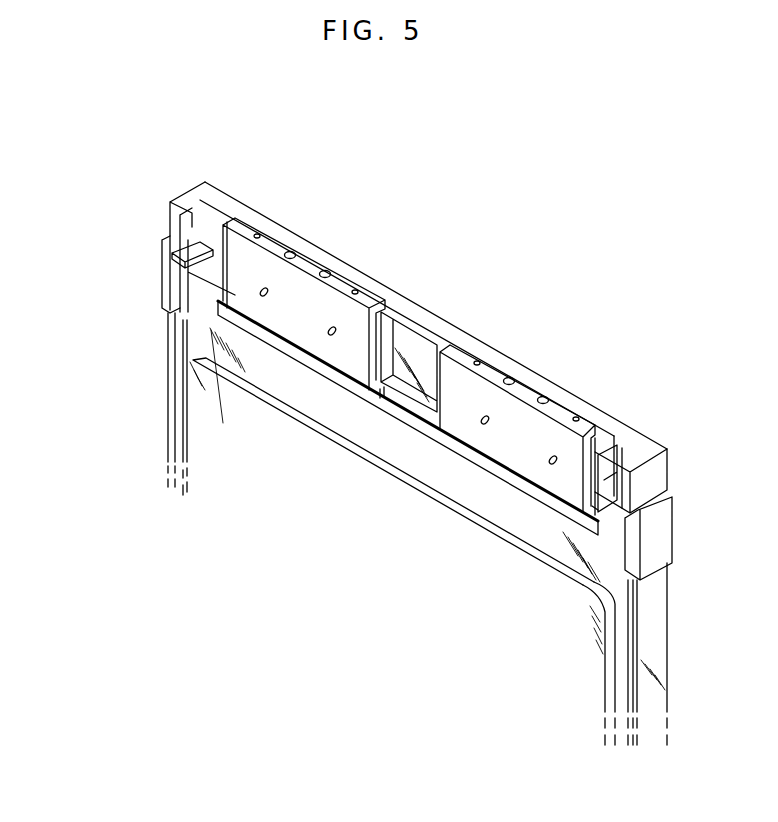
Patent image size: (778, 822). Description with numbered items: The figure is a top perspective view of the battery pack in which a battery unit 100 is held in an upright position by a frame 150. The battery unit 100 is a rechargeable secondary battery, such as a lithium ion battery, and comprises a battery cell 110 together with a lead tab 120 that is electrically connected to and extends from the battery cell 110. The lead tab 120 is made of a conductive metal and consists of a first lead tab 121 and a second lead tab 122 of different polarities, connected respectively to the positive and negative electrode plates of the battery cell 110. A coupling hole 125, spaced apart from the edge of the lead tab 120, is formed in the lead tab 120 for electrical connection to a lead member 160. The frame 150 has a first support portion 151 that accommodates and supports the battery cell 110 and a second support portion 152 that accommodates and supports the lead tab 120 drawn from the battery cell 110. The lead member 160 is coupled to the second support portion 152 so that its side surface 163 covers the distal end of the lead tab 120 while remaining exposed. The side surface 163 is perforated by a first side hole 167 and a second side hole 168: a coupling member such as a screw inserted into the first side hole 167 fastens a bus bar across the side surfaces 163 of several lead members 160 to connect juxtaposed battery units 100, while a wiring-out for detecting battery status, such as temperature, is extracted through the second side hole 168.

The battery unit 100 is at (165, 428).
The battery cell 110 is at (233, 455).
The lead tab 120 is at (321, 323).
The first lead tab 121 is at (320, 316).
The second lead tab 122 is at (528, 443).
The coupling hole 125 is at (259, 291).
The frame 150 is at (97, 265).
The first support portion 151 is at (175, 400).
The second support portion 152 is at (167, 281).
The lead member 160 is at (377, 289).
The side surface 163 is at (368, 304).
The first side hole 167 is at (289, 252).
The second side hole 168 is at (257, 232).